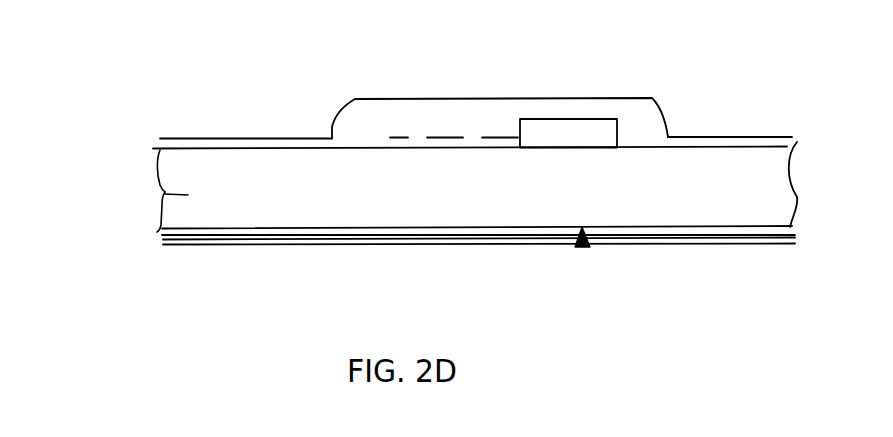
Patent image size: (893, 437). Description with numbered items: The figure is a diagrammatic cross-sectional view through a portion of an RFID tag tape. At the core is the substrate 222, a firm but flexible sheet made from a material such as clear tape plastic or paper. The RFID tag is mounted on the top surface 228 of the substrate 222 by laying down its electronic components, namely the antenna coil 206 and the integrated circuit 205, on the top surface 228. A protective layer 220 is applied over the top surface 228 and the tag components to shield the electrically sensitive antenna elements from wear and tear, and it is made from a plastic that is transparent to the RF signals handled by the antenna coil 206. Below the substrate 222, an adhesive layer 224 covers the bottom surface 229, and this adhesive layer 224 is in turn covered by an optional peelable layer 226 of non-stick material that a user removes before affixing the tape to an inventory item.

The protective layer 220 is at (153, 148).
The substrate 222 is at (165, 195).
The adhesive layer 224 is at (163, 233).
The peelable layer 226 is at (167, 243).
The top surface 228 is at (248, 148).
The bottom surface 229 is at (583, 244).
The integrated circuit 205 is at (567, 127).
The antenna coil 206 is at (398, 137).